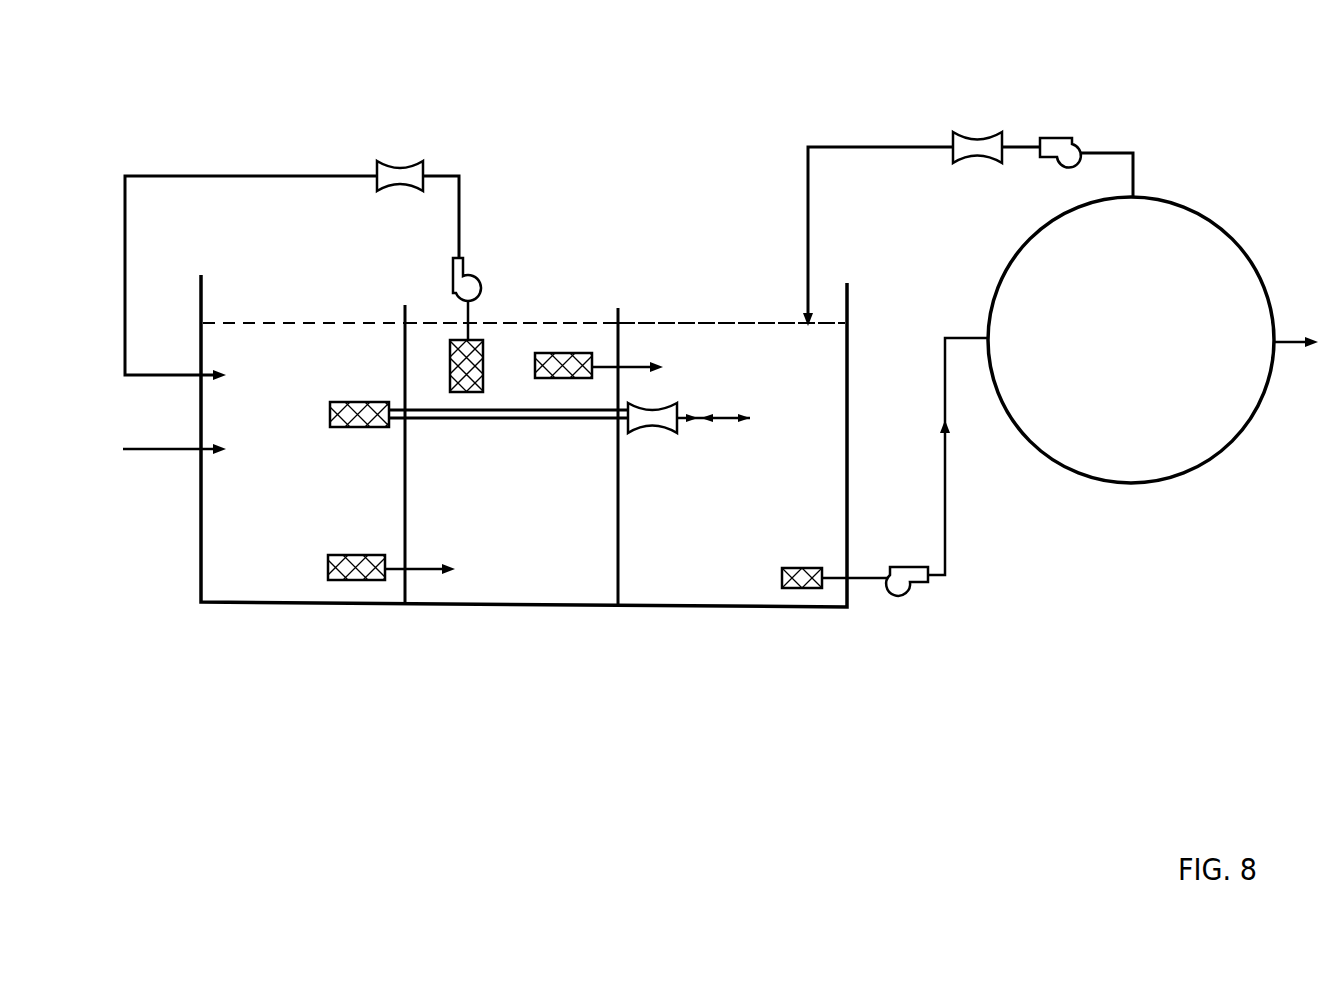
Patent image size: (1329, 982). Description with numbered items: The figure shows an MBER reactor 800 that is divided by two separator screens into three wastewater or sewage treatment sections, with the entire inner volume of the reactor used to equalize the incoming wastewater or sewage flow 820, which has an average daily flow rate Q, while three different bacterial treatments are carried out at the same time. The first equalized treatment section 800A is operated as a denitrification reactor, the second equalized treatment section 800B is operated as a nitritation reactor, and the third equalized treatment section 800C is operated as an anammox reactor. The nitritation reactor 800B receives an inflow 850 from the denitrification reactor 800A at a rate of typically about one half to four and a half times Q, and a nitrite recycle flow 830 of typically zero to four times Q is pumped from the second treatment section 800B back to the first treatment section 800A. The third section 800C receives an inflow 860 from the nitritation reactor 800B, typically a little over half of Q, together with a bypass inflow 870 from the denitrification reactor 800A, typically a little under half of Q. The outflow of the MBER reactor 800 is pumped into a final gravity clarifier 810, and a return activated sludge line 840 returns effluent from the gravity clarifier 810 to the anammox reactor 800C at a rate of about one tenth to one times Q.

The MBER reactor 800 is at (852, 298).
The first equalized treatment section 800A is at (304, 414).
The second equalized treatment section 800B is at (511, 414).
The third equalized treatment section 800C is at (731, 414).
The final gravity clarifier 810 is at (1148, 484).
The incoming wastewater or sewage flow 820 is at (174, 430).
The nitrite recycle line 830 is at (185, 174).
The return activated sludge line 840 is at (842, 144).
The inflow 850 is at (425, 568).
The inflow 860 is at (632, 367).
The bypass inflow 870 is at (733, 418).